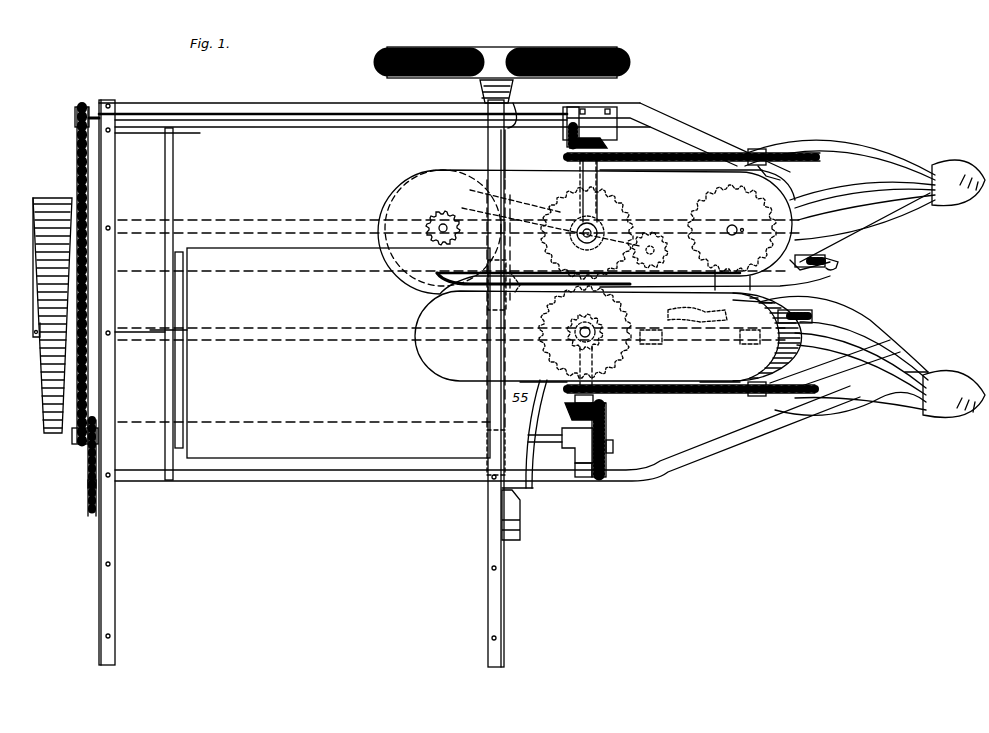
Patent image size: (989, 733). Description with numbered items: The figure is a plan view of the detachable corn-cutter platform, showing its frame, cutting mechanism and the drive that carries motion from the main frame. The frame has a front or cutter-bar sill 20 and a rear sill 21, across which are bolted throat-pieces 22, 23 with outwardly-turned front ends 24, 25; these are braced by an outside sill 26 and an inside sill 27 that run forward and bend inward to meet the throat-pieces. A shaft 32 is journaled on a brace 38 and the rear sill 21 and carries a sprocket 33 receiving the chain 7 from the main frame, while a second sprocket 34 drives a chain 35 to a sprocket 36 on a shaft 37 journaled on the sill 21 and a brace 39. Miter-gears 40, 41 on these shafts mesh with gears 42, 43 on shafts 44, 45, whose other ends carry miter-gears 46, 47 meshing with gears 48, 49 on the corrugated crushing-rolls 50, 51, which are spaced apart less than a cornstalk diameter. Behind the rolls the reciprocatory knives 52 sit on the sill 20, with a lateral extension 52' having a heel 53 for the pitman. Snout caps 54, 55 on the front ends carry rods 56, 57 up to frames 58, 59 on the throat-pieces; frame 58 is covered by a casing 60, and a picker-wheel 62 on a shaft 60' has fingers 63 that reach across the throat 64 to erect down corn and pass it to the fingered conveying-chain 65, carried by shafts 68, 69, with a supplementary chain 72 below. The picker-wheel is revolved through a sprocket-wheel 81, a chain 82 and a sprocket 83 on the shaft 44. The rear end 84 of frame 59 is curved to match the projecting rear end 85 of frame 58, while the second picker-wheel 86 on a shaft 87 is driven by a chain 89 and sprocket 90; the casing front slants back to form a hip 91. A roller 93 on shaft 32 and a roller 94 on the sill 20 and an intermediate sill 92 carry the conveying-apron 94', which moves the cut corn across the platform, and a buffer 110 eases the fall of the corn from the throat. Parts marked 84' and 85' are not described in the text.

The chain guide 7 is at (88, 488).
The front or cutter-bar sill 20 is at (496, 608).
The rear sill 21 is at (109, 588).
The throat-piece 22 is at (860, 236).
The throat-piece 23 is at (835, 340).
The outwardly-turned front end 24 is at (905, 200).
The outwardly-turned front end 25 is at (912, 382).
The outside sill 26 is at (322, 103).
The inside sill 27 is at (402, 481).
The shaft 32 is at (546, 440).
The sprocket 33 is at (93, 420).
The second sprocket 34 is at (80, 446).
The chain 35 is at (77, 165).
The sprocket 36 is at (87, 106).
The shaft 37 is at (252, 126).
The brace 38 is at (597, 461).
The brace 39 is at (618, 136).
The miter-gear 40 is at (607, 430).
The miter-gear 41 is at (572, 116).
The miter-gear 42 is at (605, 410).
The miter-gear 43 is at (570, 148).
The shaft 44 is at (583, 170).
The shaft 45 is at (594, 399).
The miter-gear 46 is at (598, 346).
The miter-gear 47 is at (642, 236).
The miter-gear 48 is at (586, 320).
The miter-gear 49 is at (575, 252).
The crushing-roll 50 is at (636, 320).
The crushing-roll 51 is at (576, 212).
The reciprocatory knives 52 is at (514, 285).
The lateral extension 52' is at (526, 452).
The heel 53 is at (520, 532).
The cap 54 is at (958, 183).
The cap 55 is at (954, 394).
The rods or bars 56 is at (937, 200).
The rods or bars 57 is at (925, 370).
The frame 58 is at (675, 176).
The frame 59 is at (728, 393).
The covering or casing 60 is at (706, 283).
The shaft 60' is at (789, 144).
The picker-wheel 62 is at (826, 265).
The fingers 63 is at (838, 262).
The throat 64 is at (715, 284).
The conveying-chain 65 is at (751, 280).
The shaft 68 is at (733, 227).
The shaft 69 is at (443, 228).
The supplementary chain 72 is at (491, 140).
The sprocket-wheel 81 is at (758, 150).
The chain 82 is at (710, 156).
The sprocket 83 is at (600, 162).
The rear end 84 is at (608, 336).
The housing support 84' is at (543, 390).
The rear end 85 is at (585, 232).
The housing end 85' is at (736, 337).
The second picker-wheel 86 is at (815, 320).
The shaft 87 is at (742, 340).
The chain 89 is at (692, 393).
The second sprocket 90 is at (760, 396).
The hip 91 is at (805, 302).
The transverse intermediate sill 92 is at (165, 388).
The roller 93 is at (325, 462).
The roller 94 is at (151, 291).
The conveying-apron 94' is at (332, 353).
The buffer 110 is at (36, 307).